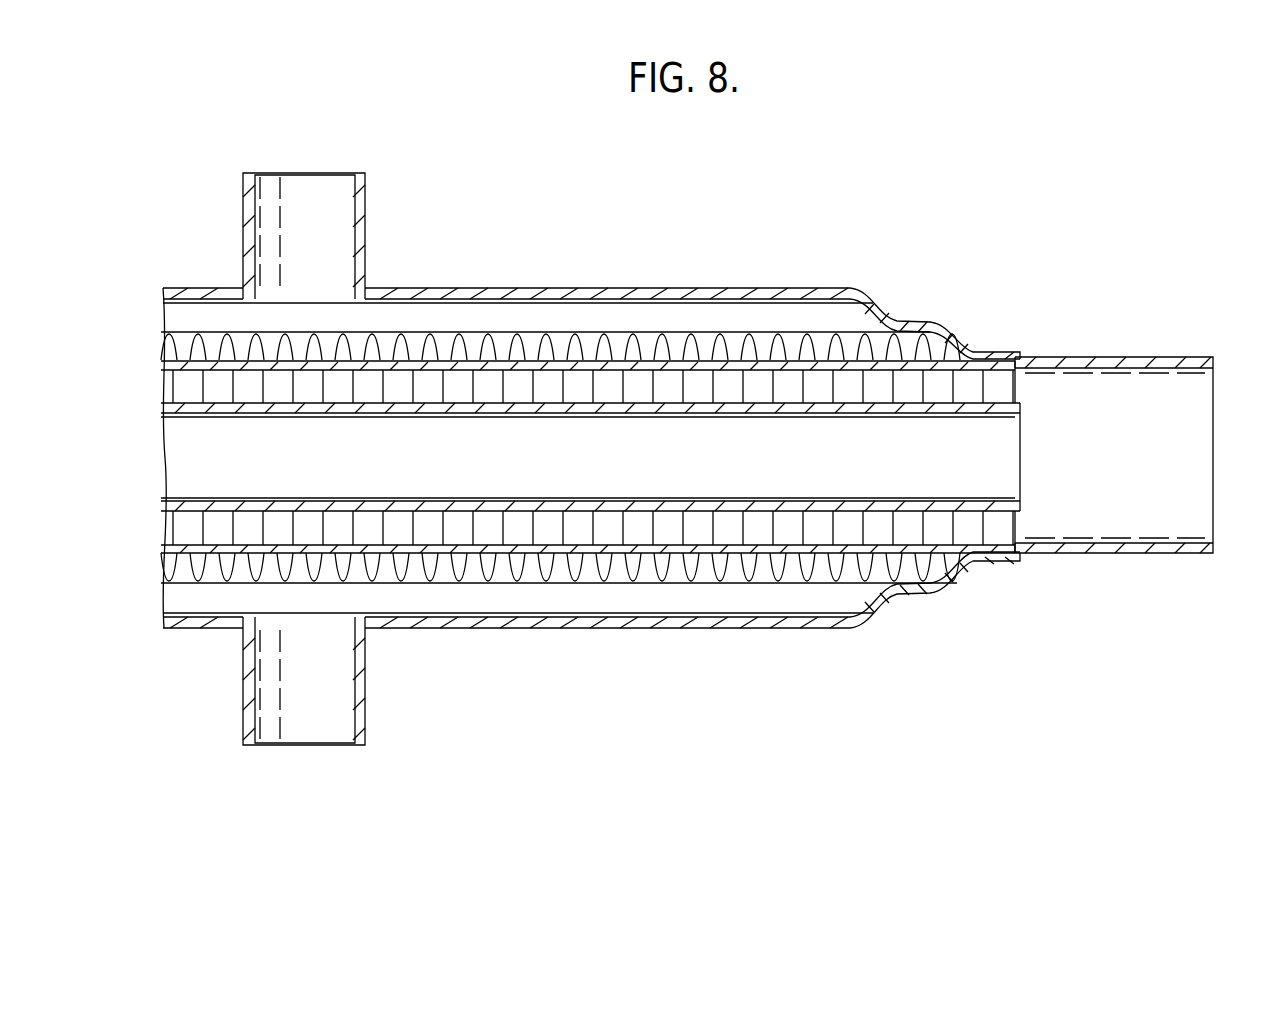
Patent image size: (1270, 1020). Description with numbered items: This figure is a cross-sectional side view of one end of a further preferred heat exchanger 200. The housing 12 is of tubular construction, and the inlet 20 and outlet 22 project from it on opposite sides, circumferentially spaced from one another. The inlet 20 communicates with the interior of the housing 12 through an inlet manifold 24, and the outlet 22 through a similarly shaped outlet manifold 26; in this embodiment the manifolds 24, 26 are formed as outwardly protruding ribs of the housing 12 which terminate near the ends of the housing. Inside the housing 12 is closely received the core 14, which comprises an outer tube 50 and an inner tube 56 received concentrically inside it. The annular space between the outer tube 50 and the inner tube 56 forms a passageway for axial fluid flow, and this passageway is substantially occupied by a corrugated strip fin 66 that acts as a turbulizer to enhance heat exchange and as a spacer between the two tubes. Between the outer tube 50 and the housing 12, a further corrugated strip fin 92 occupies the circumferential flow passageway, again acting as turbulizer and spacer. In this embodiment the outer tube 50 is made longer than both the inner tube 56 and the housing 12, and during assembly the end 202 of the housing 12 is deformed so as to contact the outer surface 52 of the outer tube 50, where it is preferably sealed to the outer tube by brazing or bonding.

The heat exchanger 200 is at (652, 456).
The inlet 20 is at (365, 210).
The outlet 22 is at (365, 717).
The inlet manifold 24 is at (740, 307).
The outlet manifold 26 is at (688, 603).
The corrugated strip fin 92 is at (868, 332).
The end of the housing 202 is at (1015, 352).
The housing 12 is at (865, 626).
The core 14 is at (600, 421).
The corrugated strip fin 66 is at (968, 533).
The inner tube 56 is at (1020, 395).
The outer tube 50 is at (1173, 355).
The outer surface 52 is at (1103, 553).